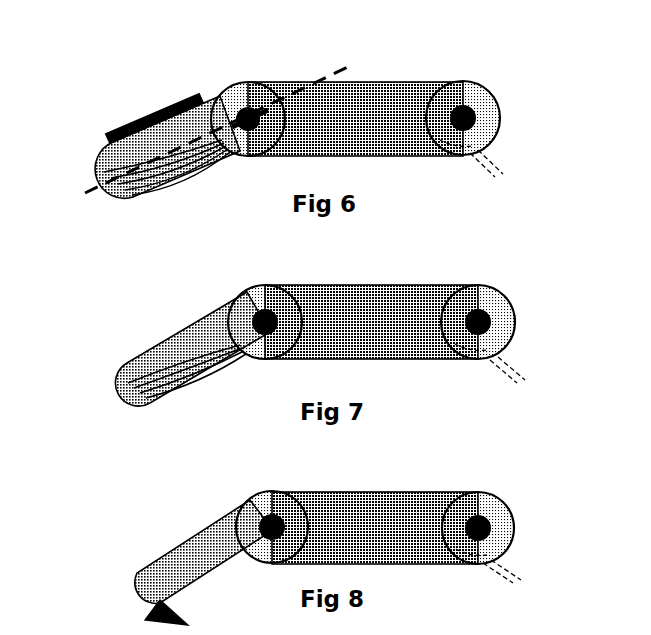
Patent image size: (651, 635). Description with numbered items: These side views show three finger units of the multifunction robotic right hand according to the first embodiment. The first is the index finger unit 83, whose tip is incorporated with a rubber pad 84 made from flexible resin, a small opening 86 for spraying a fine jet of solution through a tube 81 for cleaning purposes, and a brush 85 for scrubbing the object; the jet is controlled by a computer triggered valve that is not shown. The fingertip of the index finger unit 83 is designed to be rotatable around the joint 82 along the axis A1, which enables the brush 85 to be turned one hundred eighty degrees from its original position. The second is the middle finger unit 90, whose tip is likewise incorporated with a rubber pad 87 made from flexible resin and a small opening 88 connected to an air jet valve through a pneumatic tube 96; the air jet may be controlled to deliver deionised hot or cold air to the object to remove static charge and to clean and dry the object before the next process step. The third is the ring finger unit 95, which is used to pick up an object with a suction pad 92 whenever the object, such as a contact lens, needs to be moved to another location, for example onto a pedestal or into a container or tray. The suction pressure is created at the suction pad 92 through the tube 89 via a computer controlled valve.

In FIG. 6, the tube 81 is at (502, 173).
In FIG. 6, the joint 82 is at (255, 93).
In FIG. 6, the index finger unit 83 is at (492, 127).
In FIG. 6, the rubber pad 84 is at (203, 172).
In FIG. 6, the brush 85 is at (147, 115).
In FIG. 6, the small opening 86 is at (142, 200).
In FIG. 6, the axis A1 is at (188, 144).
In FIG. 7, the rubber pad 87 is at (232, 373).
In FIG. 7, the small opening 88 is at (150, 403).
In FIG. 7, the middle finger unit 90 is at (487, 287).
In FIG. 7, the pneumatic tube 96 is at (493, 373).
In FIG. 8, the tube 89 is at (493, 577).
In FIG. 8, the suction pad 92 is at (147, 620).
In FIG. 8, the ring finger unit 95 is at (460, 510).